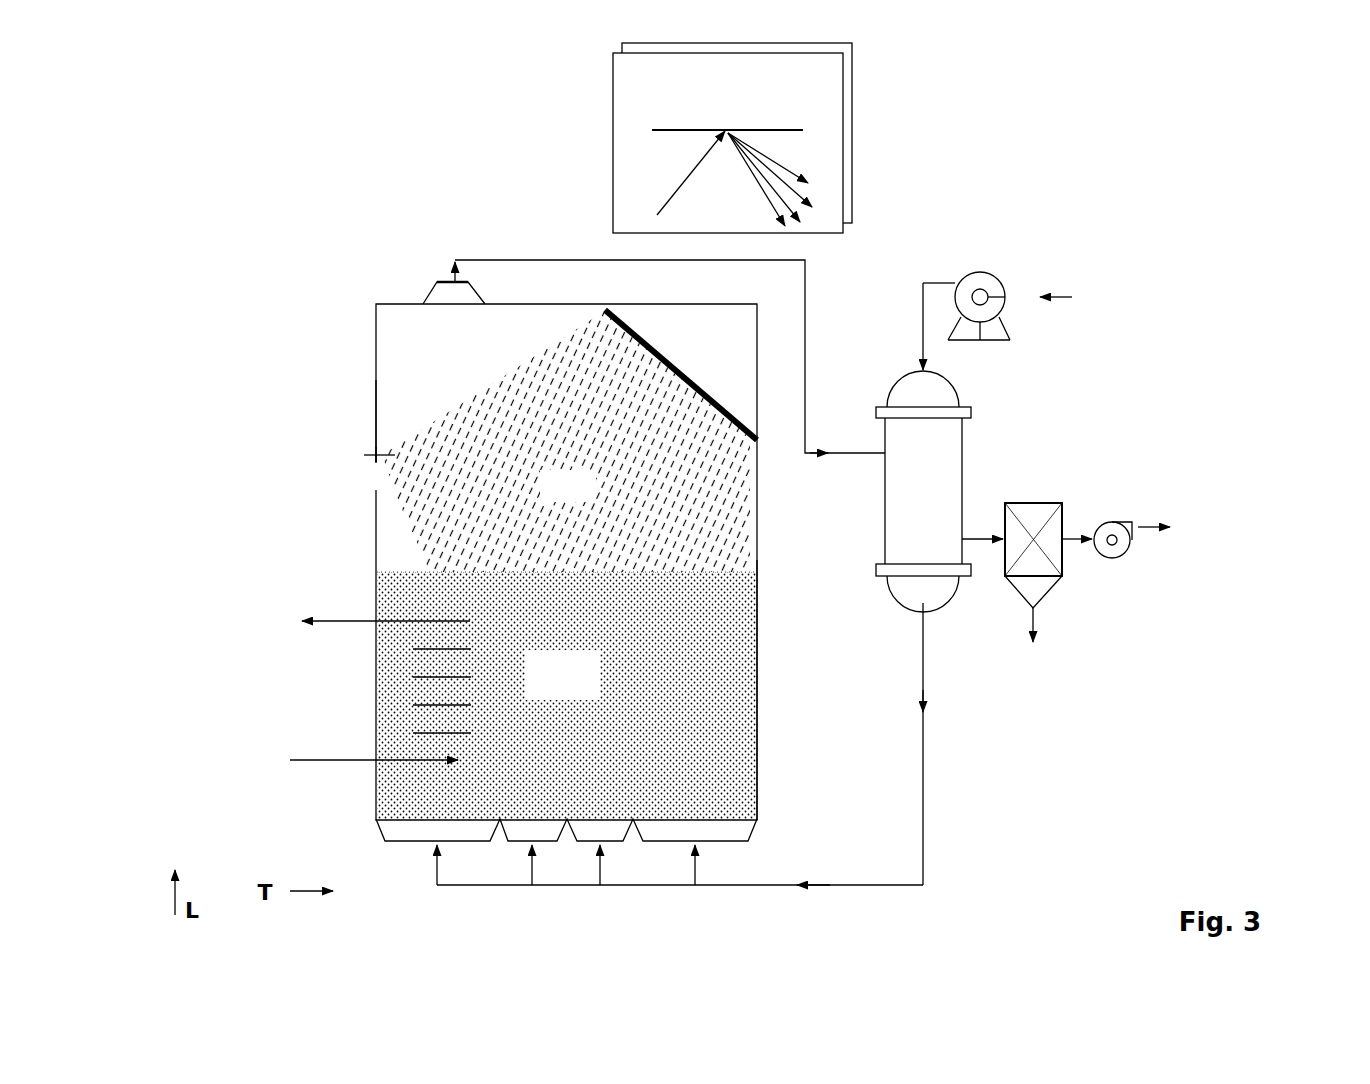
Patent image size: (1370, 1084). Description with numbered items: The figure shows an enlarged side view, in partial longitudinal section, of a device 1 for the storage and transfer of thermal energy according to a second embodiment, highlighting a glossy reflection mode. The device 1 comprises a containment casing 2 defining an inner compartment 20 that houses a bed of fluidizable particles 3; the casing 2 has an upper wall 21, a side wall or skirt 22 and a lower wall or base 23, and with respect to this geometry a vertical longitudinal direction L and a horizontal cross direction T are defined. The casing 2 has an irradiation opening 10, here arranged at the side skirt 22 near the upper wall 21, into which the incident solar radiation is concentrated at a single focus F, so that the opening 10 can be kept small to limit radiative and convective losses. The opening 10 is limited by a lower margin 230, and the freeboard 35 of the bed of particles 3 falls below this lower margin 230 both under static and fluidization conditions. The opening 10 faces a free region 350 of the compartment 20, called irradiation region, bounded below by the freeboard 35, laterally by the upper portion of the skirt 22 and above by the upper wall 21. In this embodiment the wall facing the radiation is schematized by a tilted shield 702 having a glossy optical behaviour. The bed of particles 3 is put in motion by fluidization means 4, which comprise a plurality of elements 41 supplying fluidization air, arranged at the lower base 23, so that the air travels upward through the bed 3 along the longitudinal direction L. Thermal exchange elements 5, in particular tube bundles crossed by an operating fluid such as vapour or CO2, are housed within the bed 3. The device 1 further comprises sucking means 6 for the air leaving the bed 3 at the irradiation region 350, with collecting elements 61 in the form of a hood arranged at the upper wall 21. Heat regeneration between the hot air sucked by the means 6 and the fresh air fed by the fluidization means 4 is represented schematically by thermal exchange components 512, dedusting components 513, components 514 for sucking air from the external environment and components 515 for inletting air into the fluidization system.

The device 1 is at (250, 122).
The containment casing 2 is at (760, 770).
The bed of fluidizable particles 3 is at (555, 690).
The fluidization means 4 is at (577, 905).
The thermal exchange elements 5 is at (305, 566).
The sucking means 6 is at (548, 245).
The irradiation opening 10 is at (367, 420).
The inner compartment 20 is at (400, 360).
The upper wall 21 is at (393, 303).
The side wall 22 is at (757, 628).
The lower wall 23 is at (738, 820).
The freeboard 35 is at (580, 584).
The elements supplying fluidization air 41 is at (465, 888).
The elements for collecting air 61 is at (428, 280).
The lower margin 230 is at (372, 490).
The free region 350 is at (549, 498).
The thermal exchange components 512 is at (964, 425).
The components for dedusting fluidization air 513 is at (1050, 598).
The components for sucking fluidization air from the external environment 514 is at (1132, 543).
The components for inletting air 515 is at (1010, 340).
The tilted shield 702 is at (680, 372).